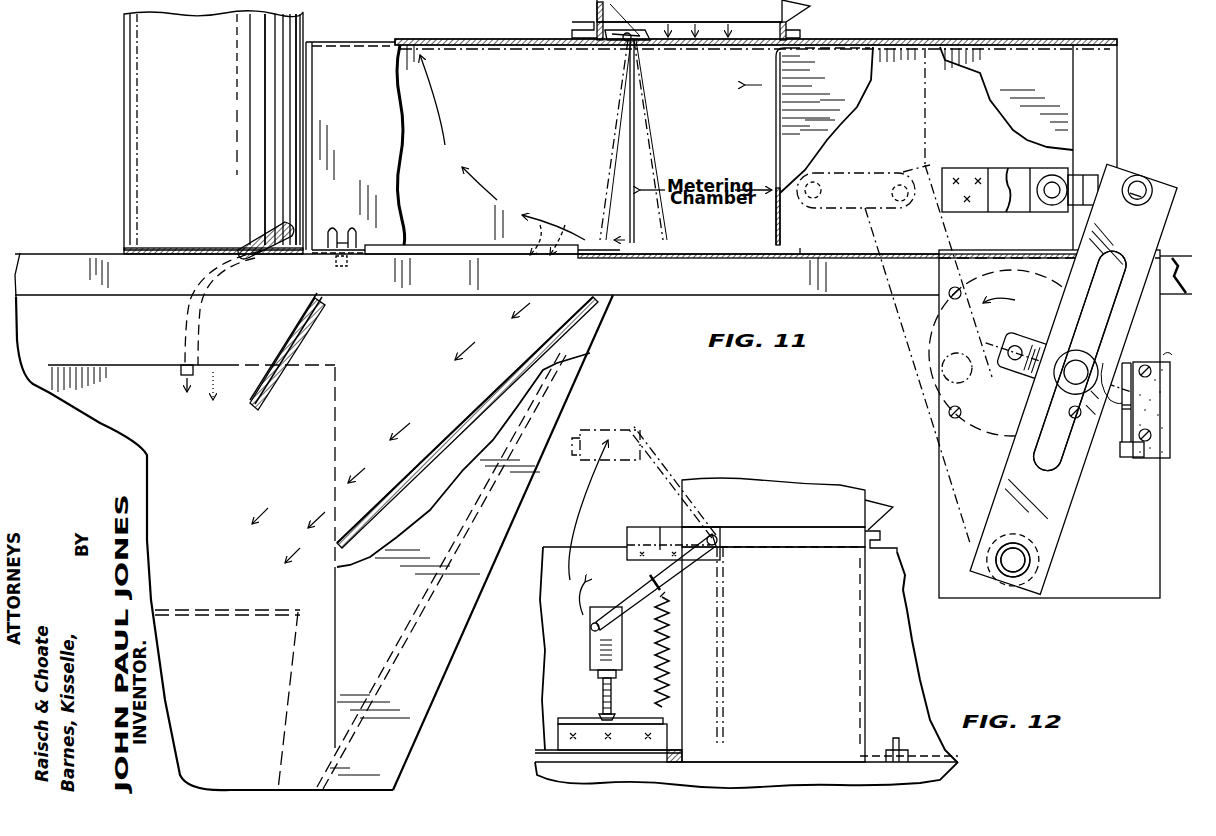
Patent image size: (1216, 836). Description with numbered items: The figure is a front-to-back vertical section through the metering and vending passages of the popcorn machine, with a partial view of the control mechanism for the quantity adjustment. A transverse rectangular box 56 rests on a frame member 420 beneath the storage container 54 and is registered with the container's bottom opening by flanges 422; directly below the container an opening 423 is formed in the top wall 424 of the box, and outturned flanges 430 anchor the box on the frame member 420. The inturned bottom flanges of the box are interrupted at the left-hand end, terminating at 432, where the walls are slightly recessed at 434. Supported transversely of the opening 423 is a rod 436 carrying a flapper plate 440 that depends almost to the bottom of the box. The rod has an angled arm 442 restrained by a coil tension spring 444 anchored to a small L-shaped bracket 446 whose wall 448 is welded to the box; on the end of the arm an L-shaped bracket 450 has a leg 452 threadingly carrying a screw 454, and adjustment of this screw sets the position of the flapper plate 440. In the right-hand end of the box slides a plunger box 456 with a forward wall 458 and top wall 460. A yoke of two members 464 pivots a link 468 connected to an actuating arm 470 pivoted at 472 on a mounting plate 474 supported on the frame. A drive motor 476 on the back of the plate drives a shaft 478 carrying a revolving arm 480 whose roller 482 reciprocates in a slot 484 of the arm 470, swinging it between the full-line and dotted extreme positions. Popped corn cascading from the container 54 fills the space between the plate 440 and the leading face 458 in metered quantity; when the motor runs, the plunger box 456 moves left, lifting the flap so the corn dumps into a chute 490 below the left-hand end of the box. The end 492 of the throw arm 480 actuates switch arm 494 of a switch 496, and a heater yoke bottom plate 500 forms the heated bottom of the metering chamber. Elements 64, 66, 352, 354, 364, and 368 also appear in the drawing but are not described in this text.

In FIG. 11, the container 54 is at (706, 28).
In FIG. 11, the transverse rectangular box 56 is at (352, 62).
In FIG. 11, the receptacle 64 is at (140, 108).
In FIG. 11, the discharge passage 66 is at (290, 652).
In FIG. 12, the upper housing block 352 is at (780, 492).
In FIG. 12, the housing flange 354 is at (785, 537).
In FIG. 11, the chute side wall 364 is at (597, 12).
In FIG. 11, the chute deflector 368 is at (812, 12).
In FIG. 11, the frame member 420 is at (392, 298).
In FIG. 11, the flanges 422 is at (590, 30).
In FIG. 12, the flanges 422 is at (878, 536).
In FIG. 11, the opening 423 is at (780, 46).
In FIG. 11, the top wall 424 is at (438, 40).
In FIG. 11, the outturned flanges 430 is at (330, 228).
In FIG. 12, the outturned flanges 430 is at (935, 762).
In FIG. 11, the termination of inturned flanges 432 is at (585, 256).
In FIG. 12, the termination of inturned flanges 432 is at (678, 753).
In FIG. 11, the recess 434 is at (430, 244).
In FIG. 12, the recess 434 is at (610, 753).
In FIG. 11, the rod 436 is at (623, 42).
In FIG. 12, the rod 436 is at (716, 536).
In FIG. 11, the flapper plate 440 is at (440, 48).
In FIG. 12, the flapper plate 440 is at (724, 655).
In FIG. 12, the arm 442 is at (655, 460).
In FIG. 12, the coil tension spring 444 is at (668, 622).
In FIG. 12, the L-shaped bracket 446 is at (582, 708).
In FIG. 12, the wall 448 is at (560, 736).
In FIG. 12, the L-shaped bracket 450 is at (595, 434).
In FIG. 12, the leg 452 is at (597, 674).
In FIG. 12, the screw 454 is at (612, 704).
In FIG. 11, the plunger box 456 is at (774, 136).
In FIG. 12, the plunger box 456 is at (856, 656).
In FIG. 11, the forward wall 458 is at (540, 122).
In FIG. 11, the top wall 460 is at (942, 48).
In FIG. 11, the yoke members 464 is at (1000, 178).
In FIG. 11, the link 468 is at (852, 178).
In FIG. 11, the actuating arm 470 is at (1158, 182).
In FIG. 11, the pivot 472 is at (1013, 573).
In FIG. 11, the mounting plate 474 is at (1080, 585).
In FIG. 11, the drive motor 476 is at (935, 385).
In FIG. 11, the shaft 478 is at (1012, 340).
In FIG. 11, the revolving arm 480 is at (1017, 378).
In FIG. 11, the roller 482 is at (949, 415).
In FIG. 11, the slot 484 is at (1120, 300).
In FIG. 11, the chute 490 is at (435, 442).
In FIG. 11, the end of throw arm 492 is at (1118, 444).
In FIG. 11, the switch arm 494 is at (1168, 392).
In FIG. 11, the switch 496 is at (1160, 462).
In FIG. 11, the bottom plate 500 is at (735, 258).